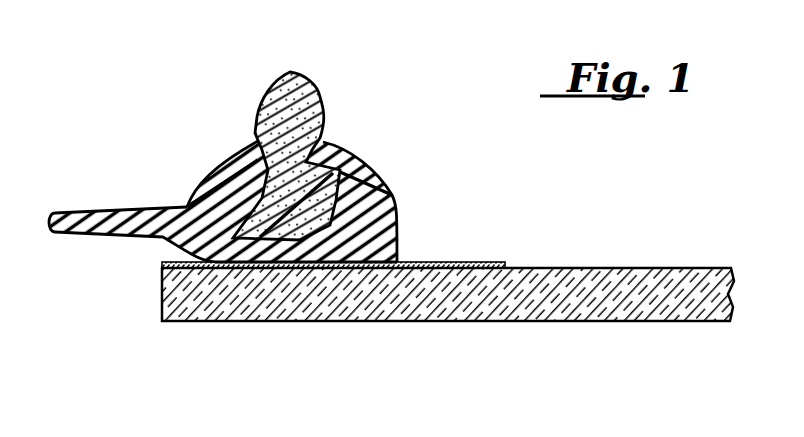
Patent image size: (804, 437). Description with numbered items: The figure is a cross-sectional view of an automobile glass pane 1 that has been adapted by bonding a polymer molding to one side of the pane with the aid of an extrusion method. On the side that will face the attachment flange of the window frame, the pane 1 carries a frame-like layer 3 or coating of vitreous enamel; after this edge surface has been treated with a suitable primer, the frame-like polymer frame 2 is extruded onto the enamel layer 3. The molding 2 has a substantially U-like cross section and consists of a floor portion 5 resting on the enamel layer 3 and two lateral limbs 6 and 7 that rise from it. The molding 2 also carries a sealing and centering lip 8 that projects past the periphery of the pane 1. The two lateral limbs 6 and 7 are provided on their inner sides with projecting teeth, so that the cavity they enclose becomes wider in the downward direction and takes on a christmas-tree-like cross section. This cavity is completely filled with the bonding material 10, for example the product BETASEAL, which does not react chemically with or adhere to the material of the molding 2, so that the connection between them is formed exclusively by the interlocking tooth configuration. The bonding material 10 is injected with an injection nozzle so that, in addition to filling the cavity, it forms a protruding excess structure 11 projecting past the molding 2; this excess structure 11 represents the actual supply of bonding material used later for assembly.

The automobile glass pane 1 is at (655, 268).
The polymer frame 2 is at (377, 162).
The frame-like layer of vitreous enamel 3 is at (478, 262).
The floor portion 5 is at (307, 257).
The lateral limb 6 is at (212, 187).
The lateral limb 7 is at (377, 207).
The sealing and centering lip 8 is at (92, 222).
The bonding material 10 is at (320, 75).
The protruding excess structure 11 is at (280, 118).